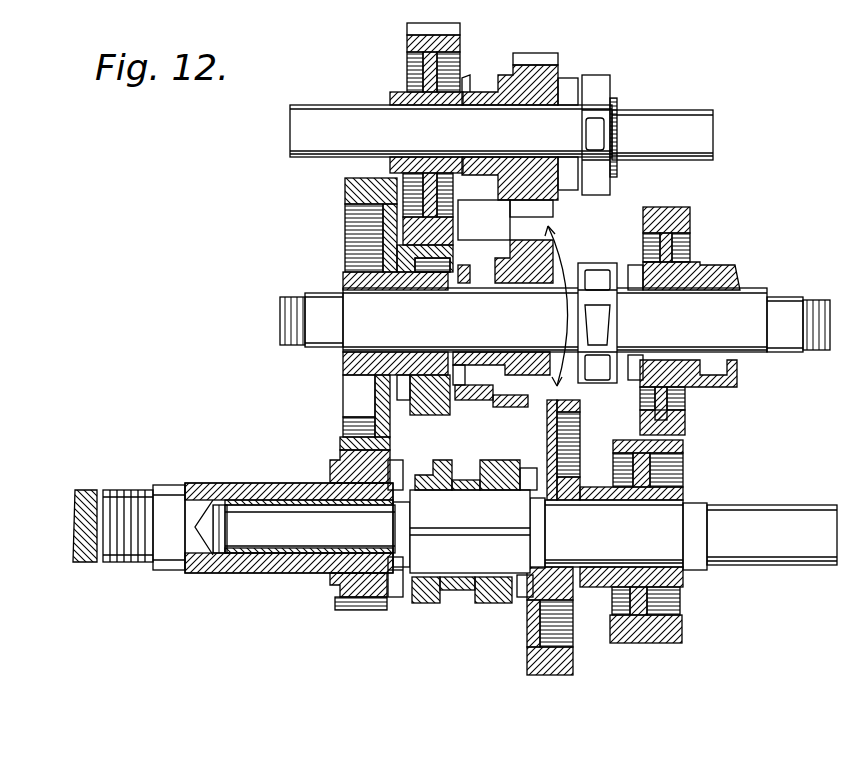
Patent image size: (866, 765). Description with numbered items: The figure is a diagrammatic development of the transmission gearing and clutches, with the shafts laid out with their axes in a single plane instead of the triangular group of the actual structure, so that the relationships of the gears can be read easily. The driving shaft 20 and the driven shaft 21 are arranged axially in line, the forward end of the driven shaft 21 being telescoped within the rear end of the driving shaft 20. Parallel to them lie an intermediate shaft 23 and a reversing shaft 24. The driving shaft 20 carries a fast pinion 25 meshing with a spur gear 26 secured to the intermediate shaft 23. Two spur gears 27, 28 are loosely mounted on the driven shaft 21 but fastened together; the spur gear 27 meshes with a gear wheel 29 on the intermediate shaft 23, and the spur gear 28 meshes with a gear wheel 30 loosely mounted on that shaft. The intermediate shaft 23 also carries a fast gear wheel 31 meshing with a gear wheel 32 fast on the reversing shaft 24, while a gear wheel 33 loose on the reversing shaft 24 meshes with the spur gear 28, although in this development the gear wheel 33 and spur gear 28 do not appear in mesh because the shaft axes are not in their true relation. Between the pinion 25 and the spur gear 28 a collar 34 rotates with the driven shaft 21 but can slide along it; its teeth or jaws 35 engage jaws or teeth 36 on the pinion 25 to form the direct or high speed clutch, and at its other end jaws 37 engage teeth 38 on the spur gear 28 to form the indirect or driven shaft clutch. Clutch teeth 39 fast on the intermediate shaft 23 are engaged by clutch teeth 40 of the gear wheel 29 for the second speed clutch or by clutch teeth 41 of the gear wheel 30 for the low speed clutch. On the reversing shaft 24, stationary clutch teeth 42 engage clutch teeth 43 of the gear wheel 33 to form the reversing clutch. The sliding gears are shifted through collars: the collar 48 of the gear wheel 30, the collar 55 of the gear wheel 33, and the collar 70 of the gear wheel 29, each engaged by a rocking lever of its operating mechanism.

The driving shaft 20 is at (233, 515).
The driven shaft 21 is at (531, 525).
The intermediate shaft 23 is at (555, 310).
The reversing shaft 24 is at (321, 101).
The pinion 25 is at (356, 603).
The spur gear 26 is at (347, 191).
The spur gear 27 is at (682, 626).
The spur gear 28 is at (573, 659).
The gear wheel 29 is at (697, 391).
The gear wheel 30 is at (501, 388).
The gear wheel 31 is at (429, 405).
The gear wheel 32 is at (456, 59).
The gear wheel 33 is at (552, 70).
The collar 34 is at (472, 592).
The teeth or jaws 35 is at (414, 604).
The jaws or teeth 36 is at (397, 600).
The jaws or teeth 37 is at (508, 605).
The teeth or jaws 38 is at (526, 600).
The clutch teeth 39 is at (600, 270).
The clutch teeth or jaws 40 is at (634, 272).
The clutch teeth or jaws 41 is at (572, 275).
The clutch teeth 42 is at (608, 86).
The clutch teeth 43 is at (572, 88).
The collar 48 is at (505, 241).
The collar 55 is at (481, 76).
The collar 70 is at (691, 248).